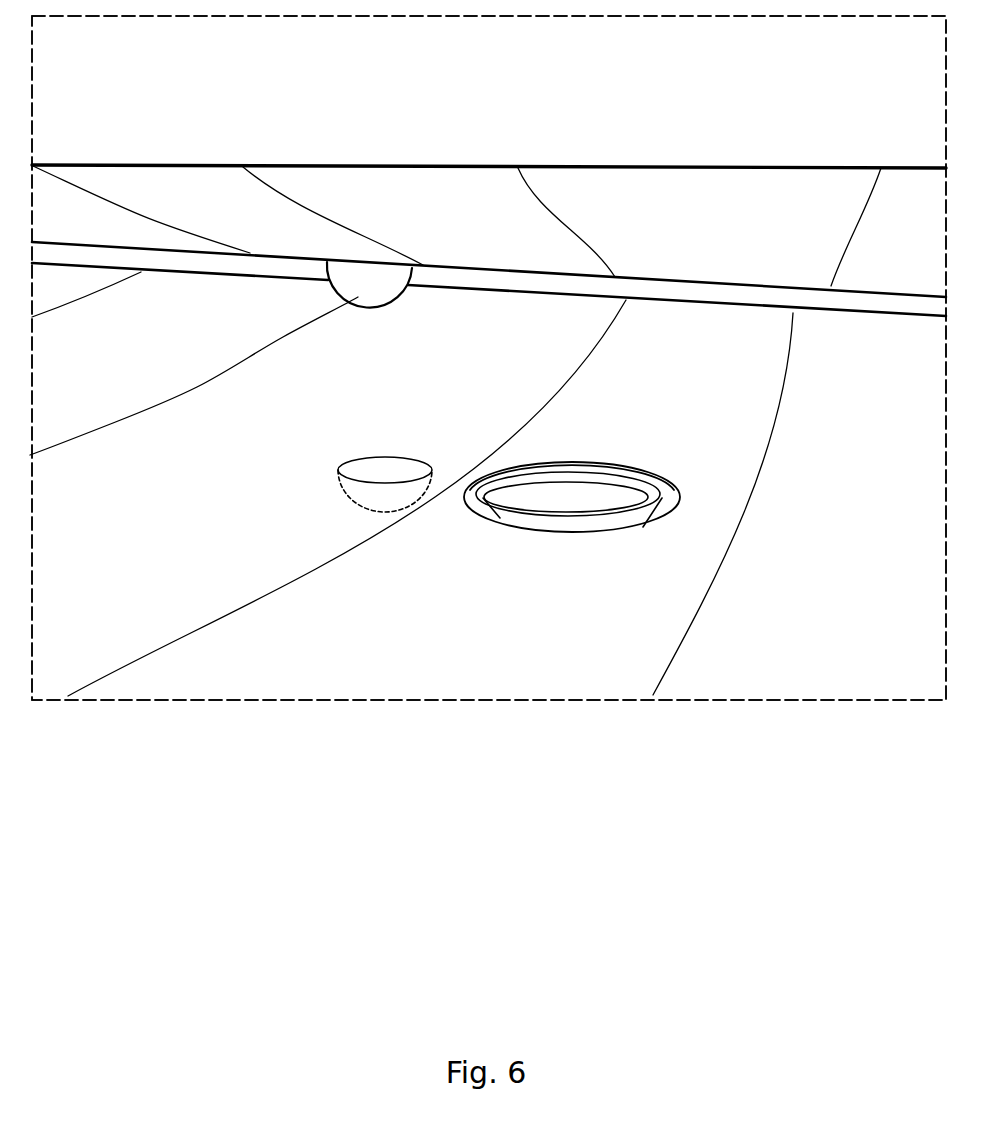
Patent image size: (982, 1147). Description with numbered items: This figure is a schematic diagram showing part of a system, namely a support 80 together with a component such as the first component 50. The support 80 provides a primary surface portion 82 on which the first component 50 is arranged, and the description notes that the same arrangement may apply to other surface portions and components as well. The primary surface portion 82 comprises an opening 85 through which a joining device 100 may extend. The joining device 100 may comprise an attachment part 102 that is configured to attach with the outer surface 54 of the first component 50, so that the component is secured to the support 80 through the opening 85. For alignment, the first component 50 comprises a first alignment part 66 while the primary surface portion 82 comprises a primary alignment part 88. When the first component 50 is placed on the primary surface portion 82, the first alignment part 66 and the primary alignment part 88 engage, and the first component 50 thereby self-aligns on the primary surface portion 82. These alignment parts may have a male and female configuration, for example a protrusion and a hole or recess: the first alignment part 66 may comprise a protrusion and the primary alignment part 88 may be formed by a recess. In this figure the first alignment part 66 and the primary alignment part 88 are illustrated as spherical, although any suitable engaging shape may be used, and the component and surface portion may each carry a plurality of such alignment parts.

The first component 50 is at (568, 122).
The outer surface 54 is at (439, 192).
The first alignment part 66 is at (353, 277).
The support 80 is at (822, 673).
The primary surface portion 82 is at (489, 358).
The opening 85 is at (673, 502).
The primary alignment part 88 is at (382, 472).
The joining device 100 is at (520, 520).
The attachment part 102 is at (598, 498).